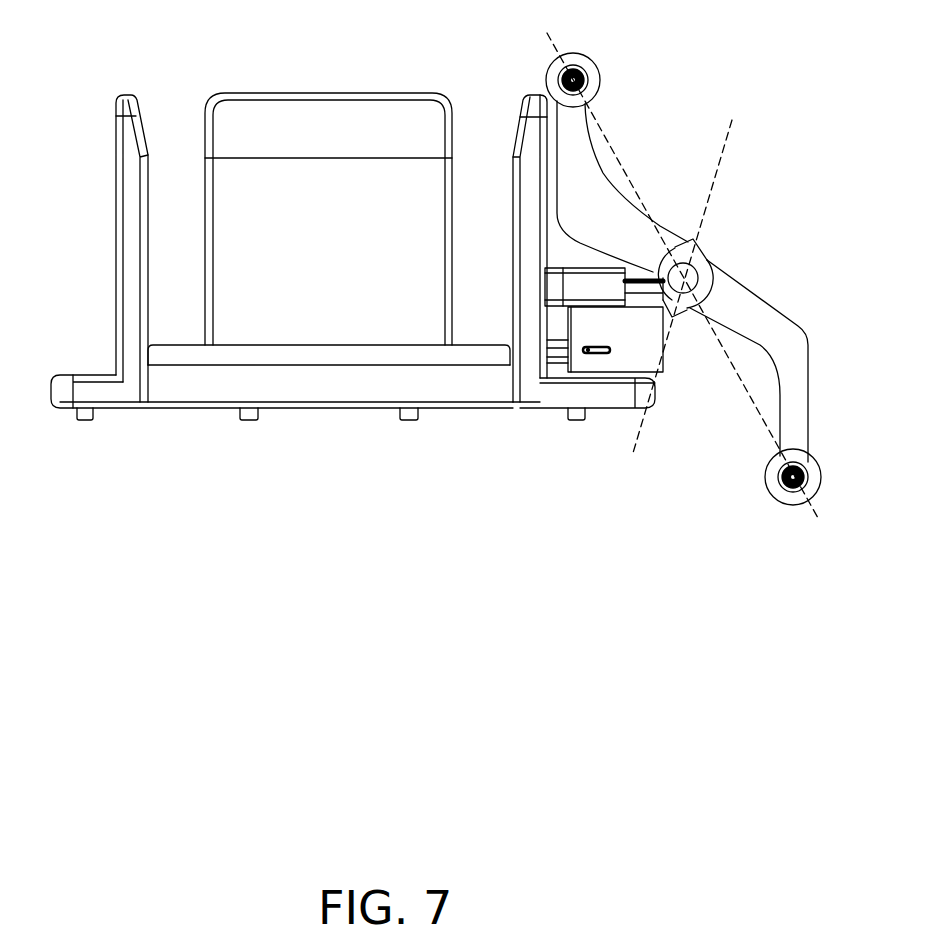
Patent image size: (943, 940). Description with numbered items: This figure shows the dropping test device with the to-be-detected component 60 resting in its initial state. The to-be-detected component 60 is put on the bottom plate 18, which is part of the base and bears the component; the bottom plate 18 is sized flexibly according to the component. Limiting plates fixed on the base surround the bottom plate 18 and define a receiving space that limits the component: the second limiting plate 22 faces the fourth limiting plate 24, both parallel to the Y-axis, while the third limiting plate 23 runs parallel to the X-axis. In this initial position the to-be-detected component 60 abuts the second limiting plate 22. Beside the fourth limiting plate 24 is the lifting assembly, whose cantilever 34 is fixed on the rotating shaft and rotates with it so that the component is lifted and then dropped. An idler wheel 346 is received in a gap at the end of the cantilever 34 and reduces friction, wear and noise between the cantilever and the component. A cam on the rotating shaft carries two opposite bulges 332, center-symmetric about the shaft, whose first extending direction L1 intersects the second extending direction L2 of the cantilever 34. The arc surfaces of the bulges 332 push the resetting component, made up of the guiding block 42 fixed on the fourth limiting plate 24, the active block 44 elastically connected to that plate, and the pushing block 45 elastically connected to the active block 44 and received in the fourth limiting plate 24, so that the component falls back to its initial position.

The bottom plate 18 is at (340, 395).
The second limiting plate 22 is at (127, 103).
The third limiting plate 23 is at (317, 112).
The fourth limiting plate 24 is at (536, 107).
The cantilever 34 is at (592, 205).
The guiding block 42 is at (607, 287).
The active block 44 is at (655, 352).
The pushing block 45 is at (560, 355).
The to-be-detected component 60 is at (488, 358).
The bulges 332 is at (697, 262).
The idler wheel 346 is at (590, 68).
The first extending direction L1 is at (727, 143).
The second extending direction L2 is at (555, 38).